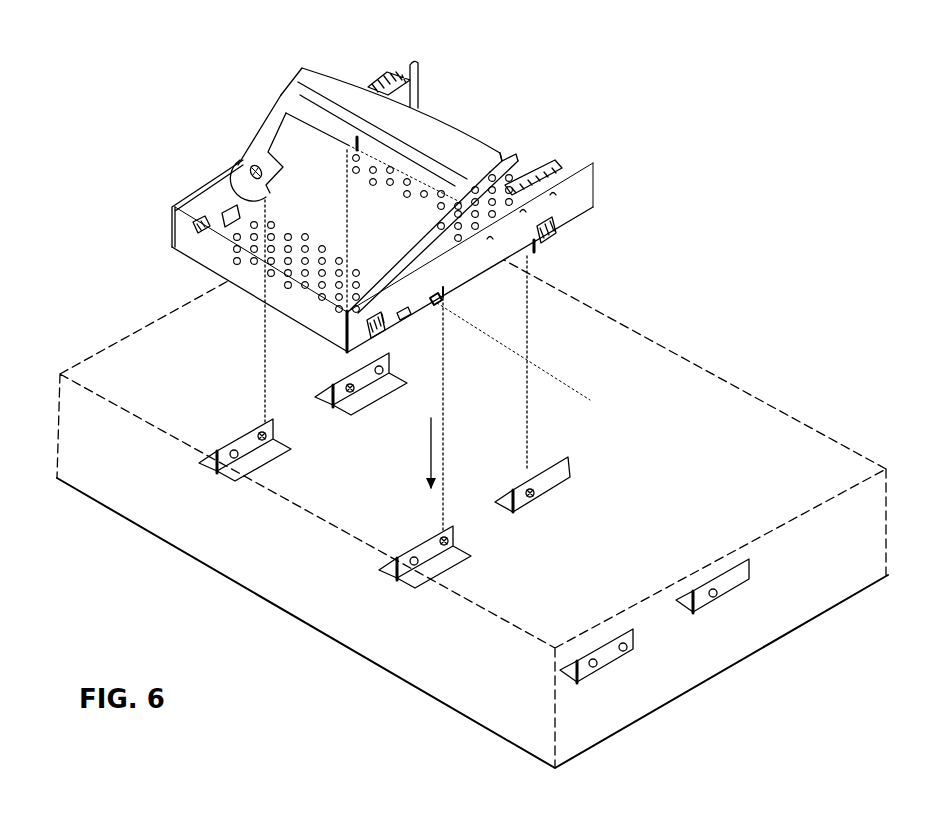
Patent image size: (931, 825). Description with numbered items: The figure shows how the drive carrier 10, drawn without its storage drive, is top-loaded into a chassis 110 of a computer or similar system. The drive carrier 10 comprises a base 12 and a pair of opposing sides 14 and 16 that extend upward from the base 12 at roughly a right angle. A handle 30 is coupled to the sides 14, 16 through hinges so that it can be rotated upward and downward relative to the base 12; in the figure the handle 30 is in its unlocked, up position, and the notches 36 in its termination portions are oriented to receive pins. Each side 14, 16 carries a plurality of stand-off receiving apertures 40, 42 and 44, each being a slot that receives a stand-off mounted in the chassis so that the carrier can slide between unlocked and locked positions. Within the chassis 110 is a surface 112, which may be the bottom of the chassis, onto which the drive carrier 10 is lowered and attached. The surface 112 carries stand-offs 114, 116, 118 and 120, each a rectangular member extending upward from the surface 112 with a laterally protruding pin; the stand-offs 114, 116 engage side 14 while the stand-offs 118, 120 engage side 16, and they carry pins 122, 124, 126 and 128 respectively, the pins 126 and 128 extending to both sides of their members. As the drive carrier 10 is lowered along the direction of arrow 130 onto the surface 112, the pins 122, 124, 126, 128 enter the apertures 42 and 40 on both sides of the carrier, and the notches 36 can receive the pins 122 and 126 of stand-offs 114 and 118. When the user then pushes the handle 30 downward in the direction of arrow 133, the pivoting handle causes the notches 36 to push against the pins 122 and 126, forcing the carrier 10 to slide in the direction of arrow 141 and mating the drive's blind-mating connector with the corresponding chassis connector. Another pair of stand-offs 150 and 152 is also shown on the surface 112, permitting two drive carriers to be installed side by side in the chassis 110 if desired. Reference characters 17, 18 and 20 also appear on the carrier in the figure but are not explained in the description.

The drive carrier 10 is at (218, 135).
The base 12 is at (230, 265).
The side 14 is at (191, 206).
The side 16 is at (572, 207).
The handle end portion 17 is at (476, 126).
The latch 18 is at (407, 63).
The rail end portion 20 is at (592, 163).
The handle 30 is at (328, 86).
The stand-off receiving notch 36 is at (273, 195).
The stand-off receiving aperture 40 is at (344, 146).
The stand-off receiving aperture 42 is at (439, 301).
The stand-off receiving aperture 44 is at (220, 230).
The chassis 110 is at (60, 420).
The surface 112 is at (182, 538).
The stand-off 114 is at (230, 458).
The stand-off 116 is at (357, 373).
The stand-off 118 is at (417, 559).
The stand-off 120 is at (570, 466).
The pin 122 is at (266, 441).
The pin 124 is at (354, 391).
The pin 126 is at (452, 537).
The pin 128 is at (534, 495).
The arrow 130 is at (437, 467).
The arrow 133 is at (290, 86).
The arrow 141 is at (506, 128).
The stand-off 150 is at (618, 666).
The stand-off 152 is at (733, 580).